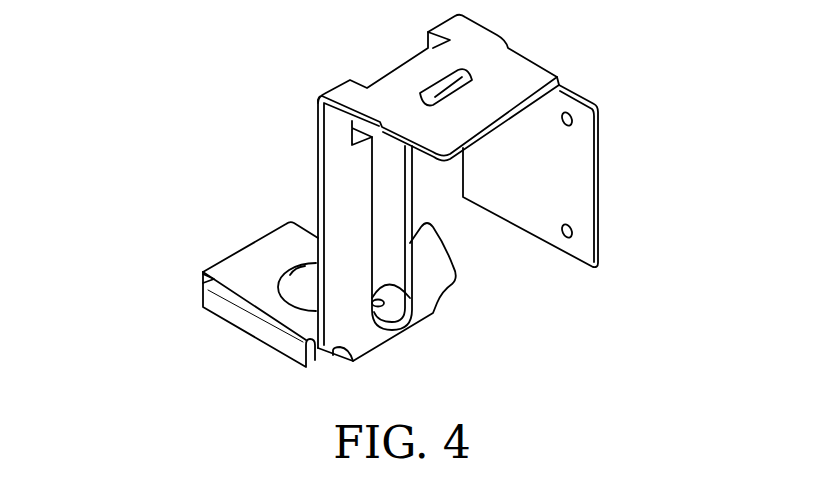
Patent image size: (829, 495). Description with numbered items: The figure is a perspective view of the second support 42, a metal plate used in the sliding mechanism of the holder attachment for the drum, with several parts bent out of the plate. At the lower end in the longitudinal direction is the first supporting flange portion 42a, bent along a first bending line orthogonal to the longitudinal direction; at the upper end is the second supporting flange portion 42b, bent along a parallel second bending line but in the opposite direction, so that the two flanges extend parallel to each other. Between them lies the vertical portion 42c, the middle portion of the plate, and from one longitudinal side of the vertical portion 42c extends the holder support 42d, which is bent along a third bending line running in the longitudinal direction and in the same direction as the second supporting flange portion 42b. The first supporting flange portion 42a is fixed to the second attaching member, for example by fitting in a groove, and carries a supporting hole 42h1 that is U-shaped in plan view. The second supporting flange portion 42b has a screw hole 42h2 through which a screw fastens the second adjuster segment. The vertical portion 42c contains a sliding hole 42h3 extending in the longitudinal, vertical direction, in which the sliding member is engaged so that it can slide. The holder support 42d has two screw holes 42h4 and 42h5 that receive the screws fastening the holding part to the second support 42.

The second support 42 is at (128, 84).
The first supporting flange portion 42a is at (248, 290).
The second supporting flange portion 42b is at (507, 62).
The vertical portion 42c is at (447, 202).
The holder support 42d is at (598, 110).
The supporting hole 42h1 is at (303, 245).
The screw hole 42h2 is at (440, 83).
The sliding hole 42h3 is at (447, 202).
The screw hole 42h4 is at (567, 125).
The screw hole 42h5 is at (566, 226).